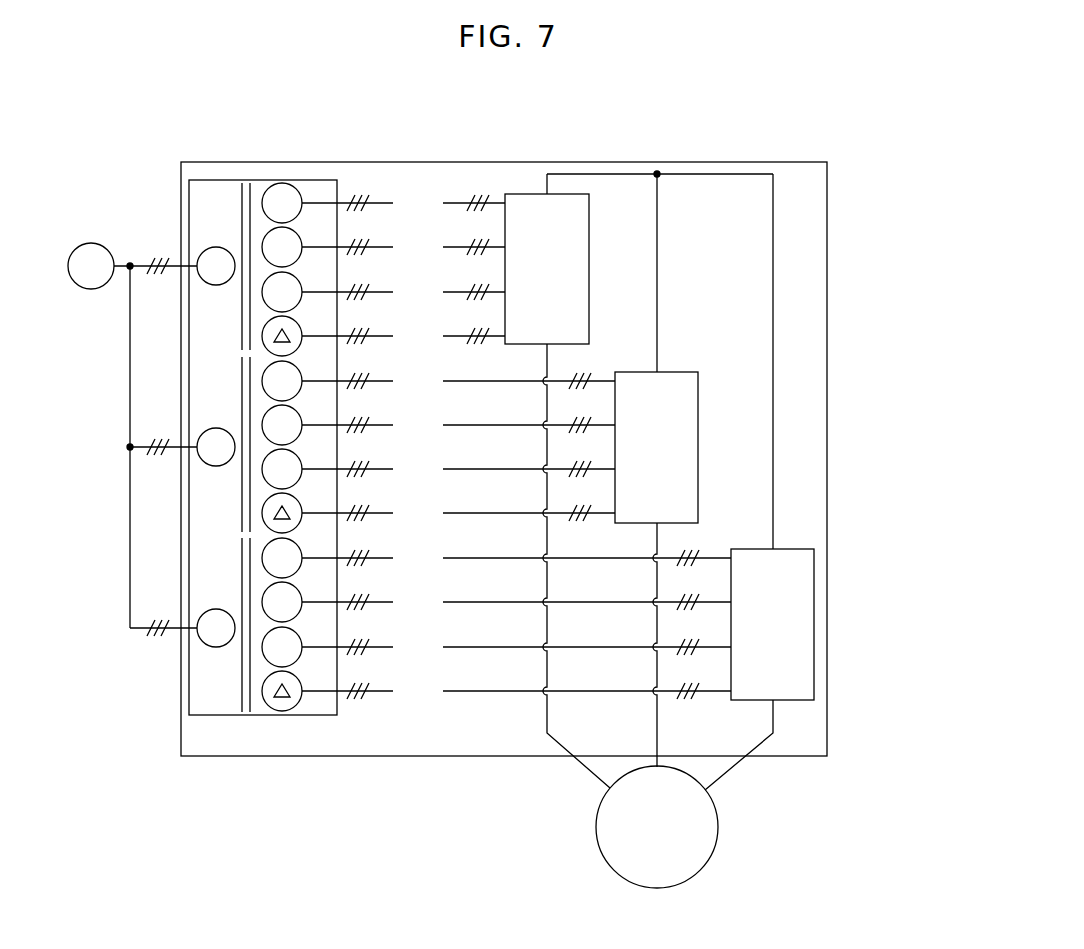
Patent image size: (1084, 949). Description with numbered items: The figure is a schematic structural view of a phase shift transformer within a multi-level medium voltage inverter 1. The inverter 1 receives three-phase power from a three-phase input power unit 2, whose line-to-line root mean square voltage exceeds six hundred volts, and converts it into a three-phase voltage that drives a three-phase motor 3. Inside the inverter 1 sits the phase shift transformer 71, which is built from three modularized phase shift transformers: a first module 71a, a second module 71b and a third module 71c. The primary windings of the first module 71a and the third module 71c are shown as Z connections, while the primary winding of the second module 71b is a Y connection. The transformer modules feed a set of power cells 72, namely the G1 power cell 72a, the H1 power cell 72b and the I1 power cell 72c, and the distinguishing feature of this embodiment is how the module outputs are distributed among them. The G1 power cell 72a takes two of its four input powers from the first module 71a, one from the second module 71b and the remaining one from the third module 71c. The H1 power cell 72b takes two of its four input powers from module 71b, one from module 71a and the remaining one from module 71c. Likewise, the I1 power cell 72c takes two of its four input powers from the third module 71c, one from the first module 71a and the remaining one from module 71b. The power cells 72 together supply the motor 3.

The multi-level medium voltage inverter 1 is at (503, 162).
The 3-phase input power unit 2 is at (90, 243).
The 3-phase motor 3 is at (718, 826).
The phase shift transformer 71 is at (248, 180).
The first module 71a is at (232, 210).
The second module 71b is at (232, 397).
The third module 71c is at (232, 576).
The power cells 72 is at (718, 480).
The G1 power cell 72a is at (589, 266).
The H1 power cell 72b is at (698, 445).
The I1 power cell 72c is at (799, 624).